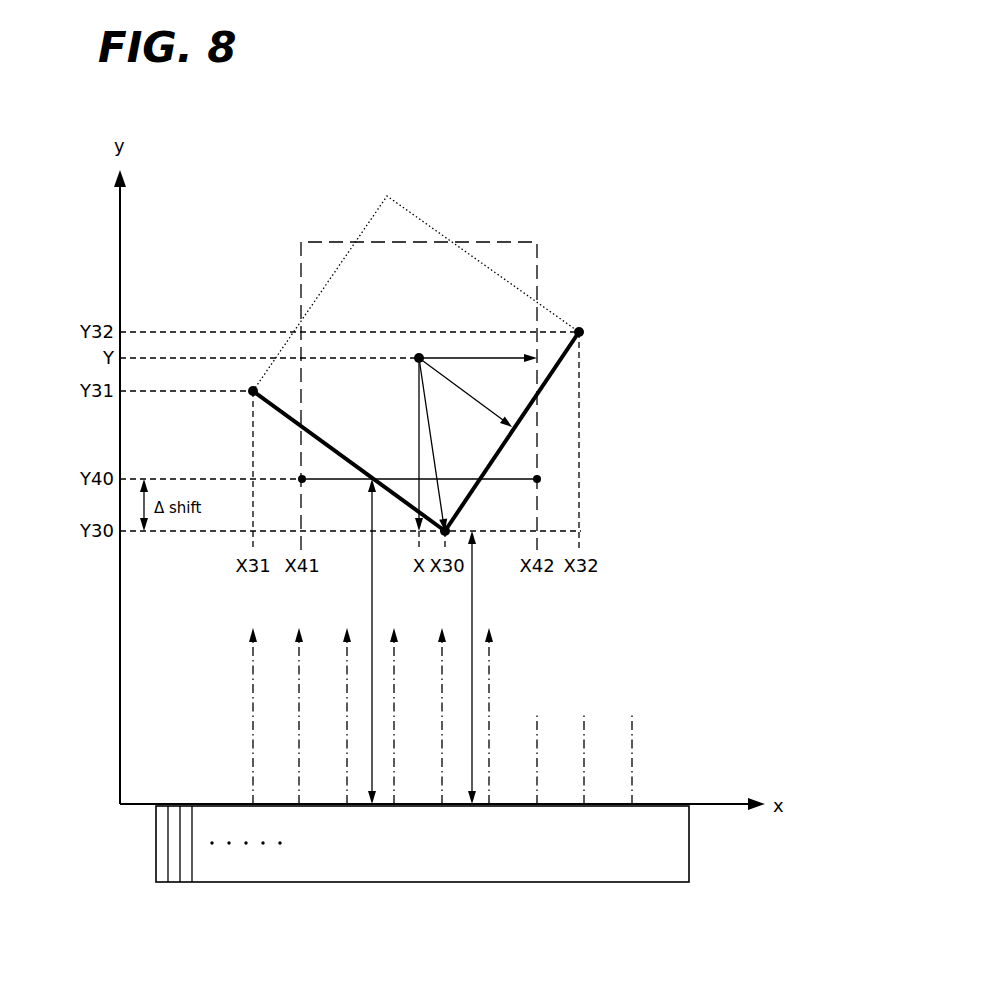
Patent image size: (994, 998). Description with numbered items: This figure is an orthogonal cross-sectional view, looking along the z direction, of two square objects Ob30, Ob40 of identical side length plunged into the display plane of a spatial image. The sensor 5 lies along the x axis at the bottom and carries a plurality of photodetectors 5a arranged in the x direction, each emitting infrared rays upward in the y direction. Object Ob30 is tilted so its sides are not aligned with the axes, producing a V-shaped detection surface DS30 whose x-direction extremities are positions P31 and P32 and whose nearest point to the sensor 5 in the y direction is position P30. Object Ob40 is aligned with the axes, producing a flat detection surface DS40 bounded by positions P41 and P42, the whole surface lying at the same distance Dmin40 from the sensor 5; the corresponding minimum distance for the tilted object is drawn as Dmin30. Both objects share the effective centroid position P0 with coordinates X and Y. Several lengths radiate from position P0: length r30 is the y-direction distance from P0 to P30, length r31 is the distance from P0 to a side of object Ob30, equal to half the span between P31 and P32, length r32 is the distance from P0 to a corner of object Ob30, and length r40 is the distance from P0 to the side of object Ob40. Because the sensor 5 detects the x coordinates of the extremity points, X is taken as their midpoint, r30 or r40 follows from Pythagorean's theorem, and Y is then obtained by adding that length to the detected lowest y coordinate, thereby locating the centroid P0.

The sensor 5 is at (393, 877).
The photodetectors 5a is at (145, 844).
The object Ob30 is at (373, 216).
The object Ob40 is at (516, 238).
The detection surface DS30 is at (549, 377).
The detection surface DS40 is at (508, 480).
The centroid position P0 is at (422, 353).
The position P30 is at (450, 528).
The position P31 is at (250, 388).
The position P32 is at (584, 329).
The position P41 is at (299, 477).
The position P42 is at (540, 477).
The length r30 is at (417, 441).
The length r31 is at (478, 397).
The length r32 is at (440, 447).
The length r40 is at (455, 358).
The minimum distance Dmin30 is at (475, 605).
The distance Dmin40 is at (370, 605).